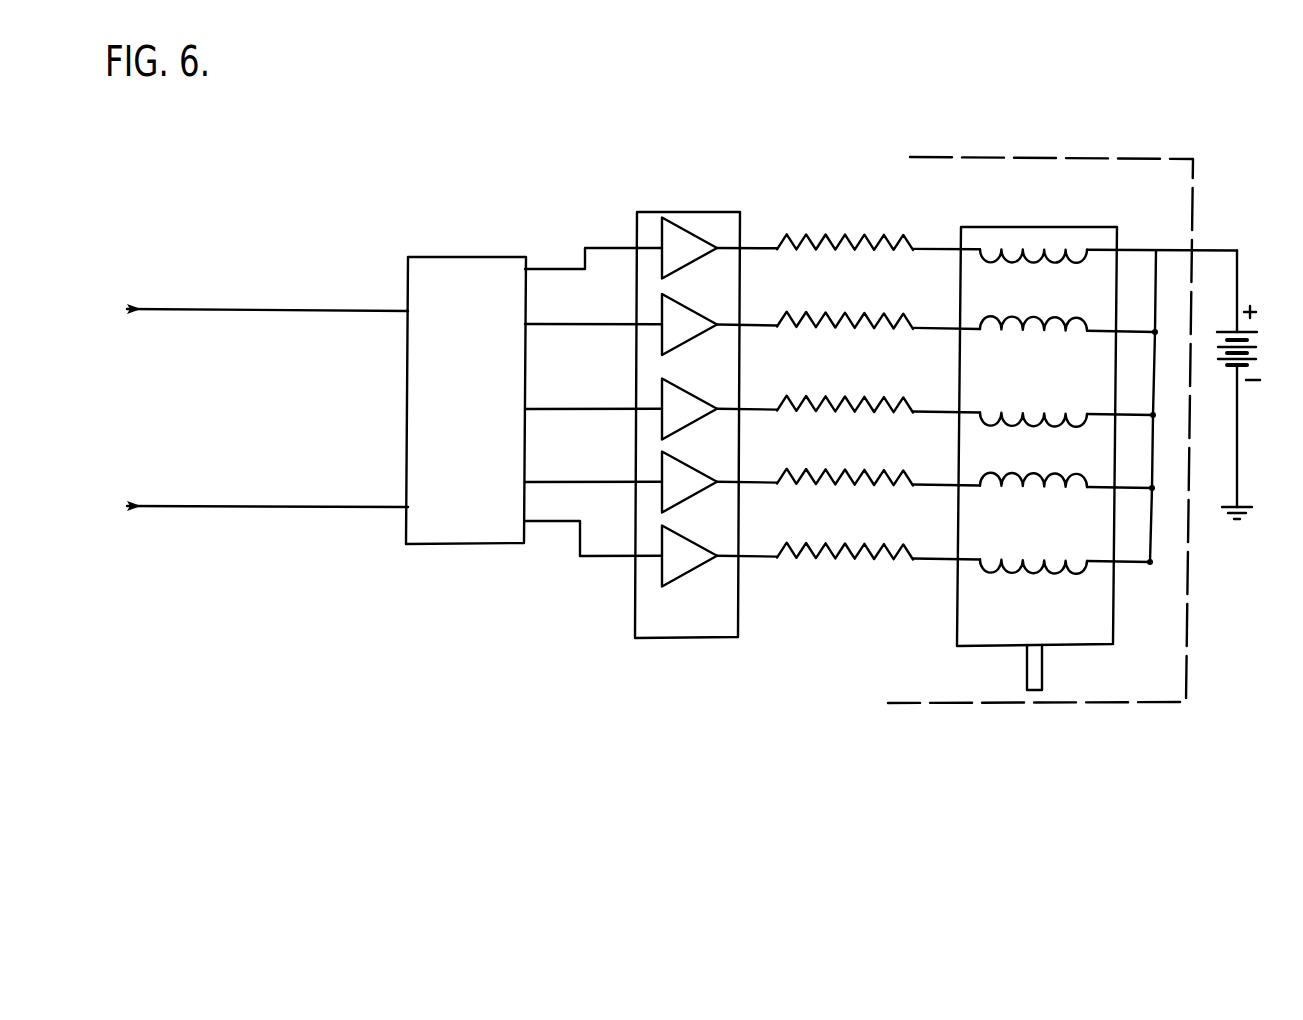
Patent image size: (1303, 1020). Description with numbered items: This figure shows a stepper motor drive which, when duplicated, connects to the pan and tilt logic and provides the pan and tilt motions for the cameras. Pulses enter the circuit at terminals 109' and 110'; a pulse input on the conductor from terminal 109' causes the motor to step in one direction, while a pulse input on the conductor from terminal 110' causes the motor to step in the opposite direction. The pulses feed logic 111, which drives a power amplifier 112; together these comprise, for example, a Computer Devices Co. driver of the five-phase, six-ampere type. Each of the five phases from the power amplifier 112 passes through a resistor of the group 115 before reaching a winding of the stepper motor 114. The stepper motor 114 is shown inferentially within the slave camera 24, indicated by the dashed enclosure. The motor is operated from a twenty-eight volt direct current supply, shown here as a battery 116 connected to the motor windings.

The terminal 109' is at (267, 295).
The terminal 110' is at (267, 493).
The logic 111 is at (468, 258).
The power amplifier 112 is at (695, 212).
The resistors 115 is at (869, 221).
The stepper motor 114 is at (1066, 220).
The slave camera 24 is at (1098, 159).
The battery 116 is at (1251, 328).